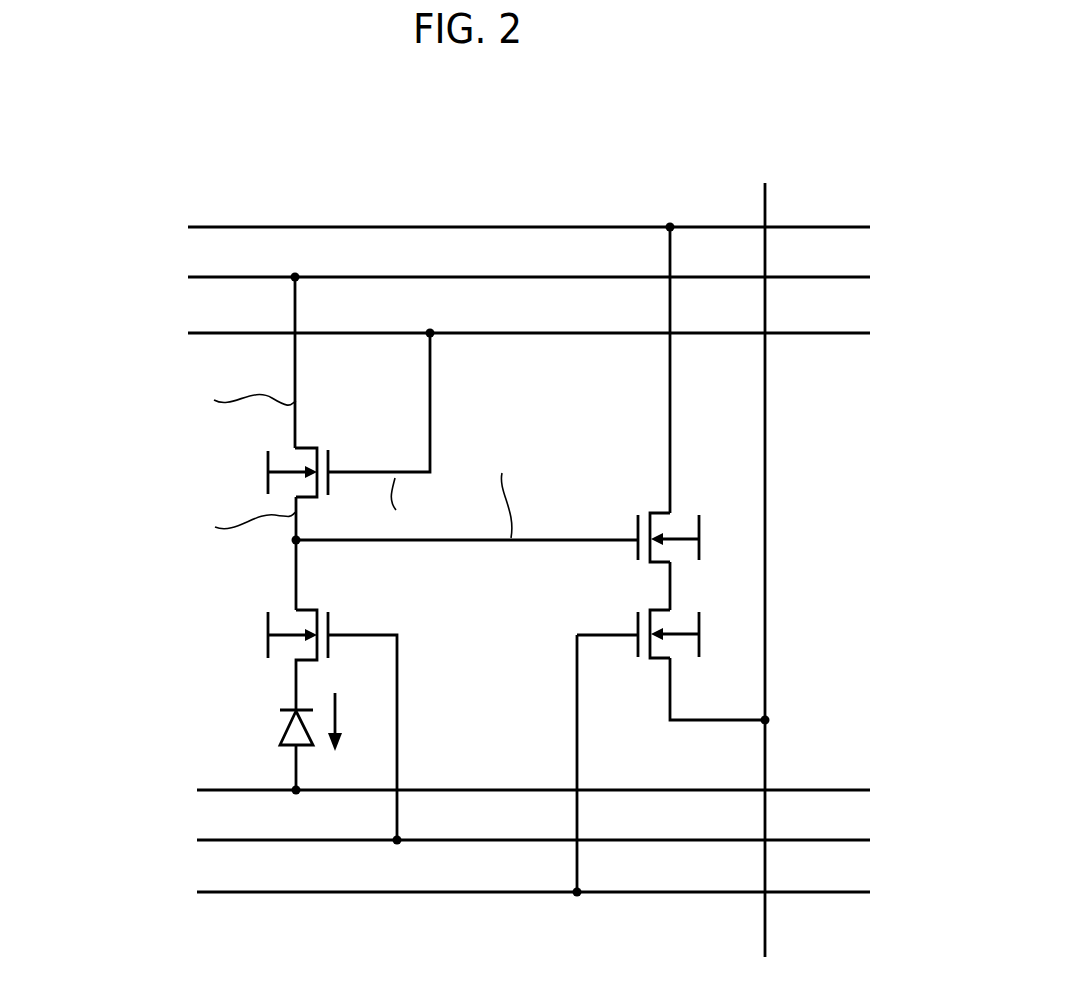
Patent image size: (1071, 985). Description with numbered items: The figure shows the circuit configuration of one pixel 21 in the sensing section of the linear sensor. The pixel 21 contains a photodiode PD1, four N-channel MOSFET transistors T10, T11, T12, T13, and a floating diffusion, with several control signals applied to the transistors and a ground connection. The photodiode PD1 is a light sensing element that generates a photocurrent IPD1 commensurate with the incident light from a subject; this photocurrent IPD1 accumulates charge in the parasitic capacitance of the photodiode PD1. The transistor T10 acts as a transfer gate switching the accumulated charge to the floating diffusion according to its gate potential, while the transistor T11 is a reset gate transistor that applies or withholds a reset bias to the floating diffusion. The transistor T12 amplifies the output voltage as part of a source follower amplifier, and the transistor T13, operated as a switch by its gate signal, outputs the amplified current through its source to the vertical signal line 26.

The pixel 21 is at (706, 146).
The vertical signal line 26 is at (766, 927).
The transistor T10 is at (313, 642).
The transistor T11 is at (312, 454).
The transistor T12 is at (645, 520).
The transistor T13 is at (645, 616).
The photodiode PD1 is at (265, 750).
The photocurrent IPD1 is at (336, 717).